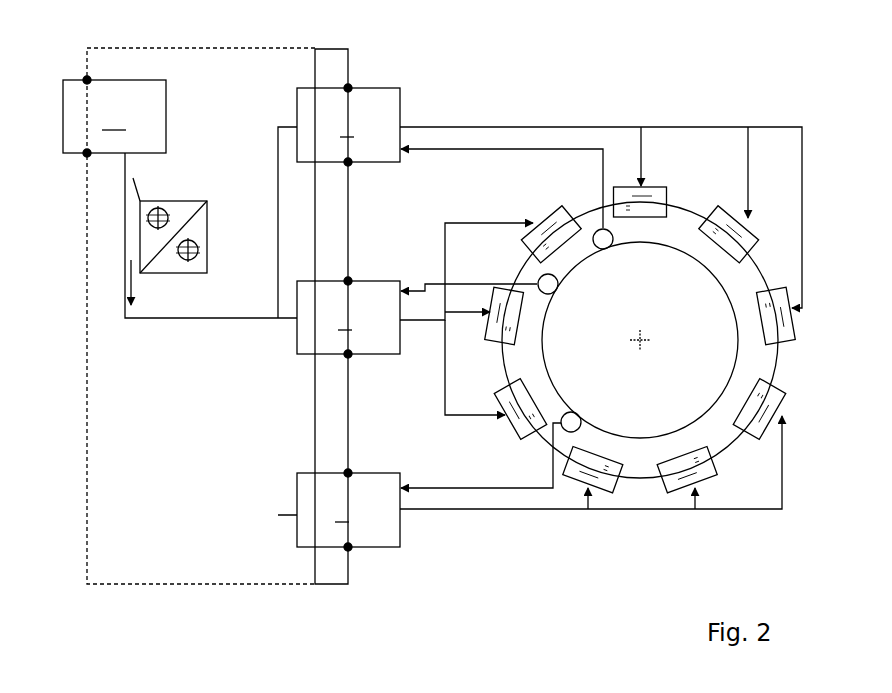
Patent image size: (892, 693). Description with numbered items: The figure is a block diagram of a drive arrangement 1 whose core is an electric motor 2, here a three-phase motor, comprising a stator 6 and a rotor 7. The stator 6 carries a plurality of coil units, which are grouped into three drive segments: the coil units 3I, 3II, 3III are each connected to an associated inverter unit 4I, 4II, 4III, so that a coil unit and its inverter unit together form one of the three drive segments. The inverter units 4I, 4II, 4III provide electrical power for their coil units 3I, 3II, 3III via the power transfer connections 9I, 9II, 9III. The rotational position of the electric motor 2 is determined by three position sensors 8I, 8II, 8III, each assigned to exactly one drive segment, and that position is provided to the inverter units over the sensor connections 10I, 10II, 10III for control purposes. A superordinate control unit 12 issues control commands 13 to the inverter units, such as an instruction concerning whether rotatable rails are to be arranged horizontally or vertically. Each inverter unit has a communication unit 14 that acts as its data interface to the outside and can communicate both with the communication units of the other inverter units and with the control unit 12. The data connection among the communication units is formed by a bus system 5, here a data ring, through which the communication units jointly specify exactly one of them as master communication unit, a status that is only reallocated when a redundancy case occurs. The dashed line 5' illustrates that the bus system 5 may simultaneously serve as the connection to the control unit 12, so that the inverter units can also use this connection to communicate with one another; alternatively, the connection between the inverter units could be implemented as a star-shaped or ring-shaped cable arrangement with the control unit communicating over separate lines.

The drive arrangement 1 is at (700, 33).
The electric motor 2 is at (744, 110).
The coil unit of first drive segment 3I is at (705, 266).
The coil unit of second drive segment 3II is at (533, 323).
The coil unit of third drive segment 3III is at (674, 436).
The first inverter unit 4I is at (348, 125).
The second inverter unit 4II is at (348, 317).
The third inverter unit 4III is at (348, 510).
The bus system 5 is at (327, 296).
The connection to control unit 5' is at (199, 296).
The stator 6 is at (780, 357).
The rotor 7 is at (736, 355).
The first position sensor 8I is at (608, 248).
The second position sensor 8II is at (558, 286).
The third position sensor 8III is at (577, 413).
The first power transfer connection 9I is at (577, 126).
The second power transfer connection 9II is at (418, 323).
The third power transfer connection 9III is at (530, 512).
The first position sensor connection 10I is at (479, 151).
The second position sensor connection 10II is at (431, 280).
The third position sensor connection 10III is at (447, 486).
The control unit 12 is at (114, 116).
The control command 13 is at (257, 317).
The communication unit 14 is at (193, 200).